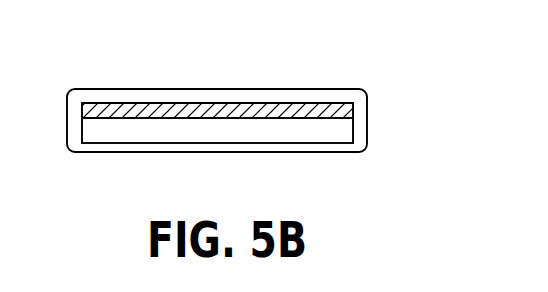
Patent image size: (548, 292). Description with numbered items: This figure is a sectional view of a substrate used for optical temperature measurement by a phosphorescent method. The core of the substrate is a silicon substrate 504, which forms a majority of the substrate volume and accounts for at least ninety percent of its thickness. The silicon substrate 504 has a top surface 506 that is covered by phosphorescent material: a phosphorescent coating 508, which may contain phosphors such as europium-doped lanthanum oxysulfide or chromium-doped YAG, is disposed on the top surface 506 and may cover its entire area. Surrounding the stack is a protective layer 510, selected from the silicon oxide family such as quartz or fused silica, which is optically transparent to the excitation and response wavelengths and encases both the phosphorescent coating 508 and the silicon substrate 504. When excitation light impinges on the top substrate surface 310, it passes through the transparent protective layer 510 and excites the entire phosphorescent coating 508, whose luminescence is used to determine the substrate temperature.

The protective layer 510 is at (118, 91).
The top substrate surface 310 is at (147, 89).
The top surface 506 is at (194, 114).
The phosphorescent coating 508 is at (291, 104).
The silicon substrate 504 is at (96, 131).